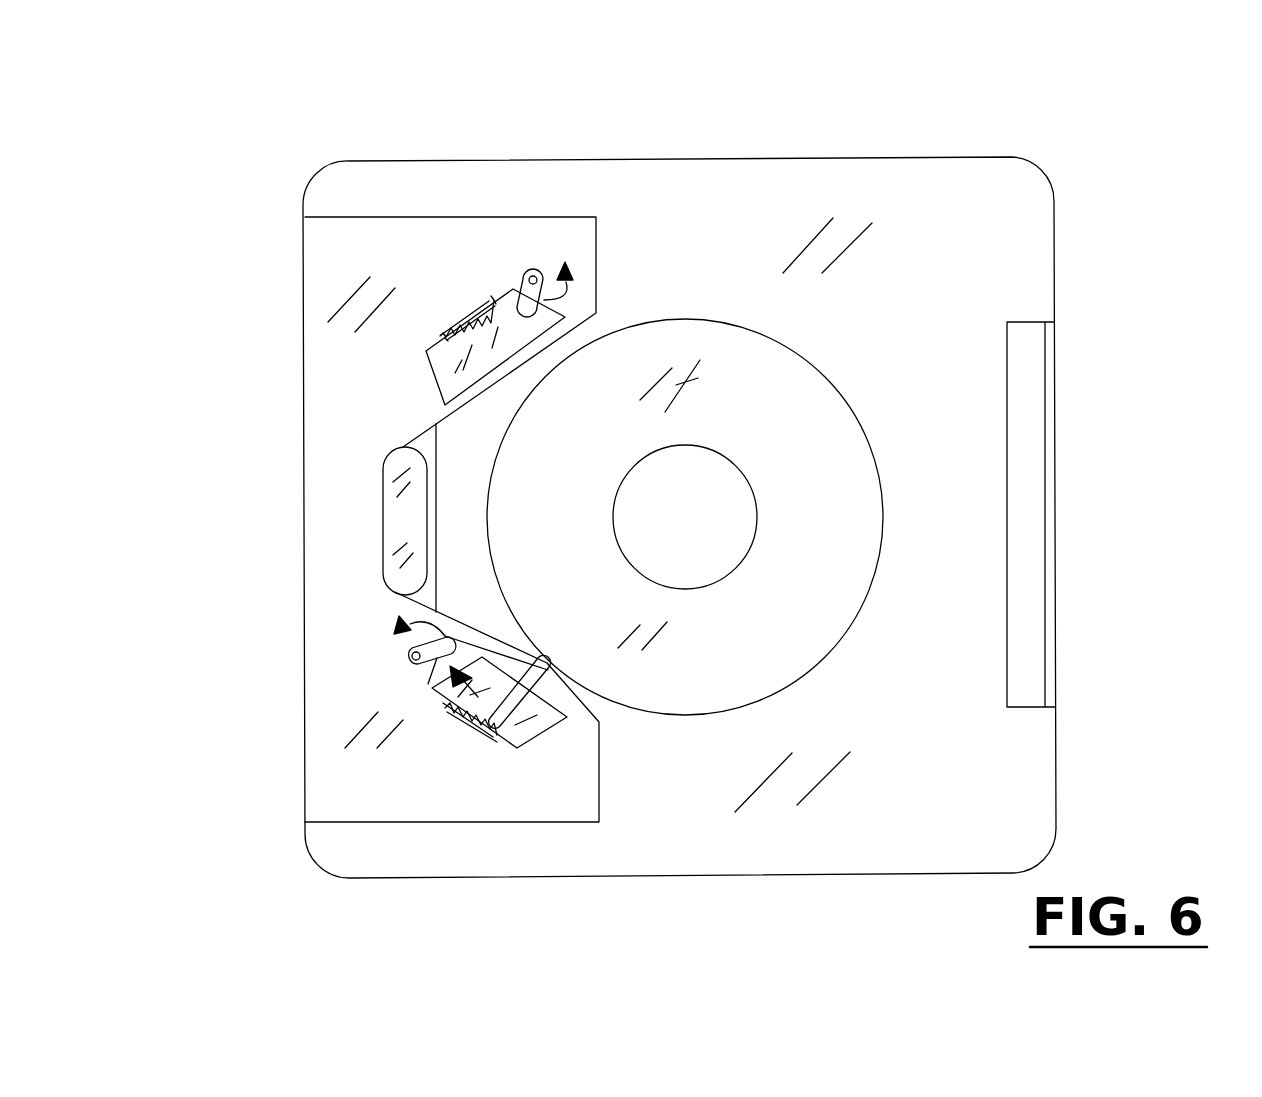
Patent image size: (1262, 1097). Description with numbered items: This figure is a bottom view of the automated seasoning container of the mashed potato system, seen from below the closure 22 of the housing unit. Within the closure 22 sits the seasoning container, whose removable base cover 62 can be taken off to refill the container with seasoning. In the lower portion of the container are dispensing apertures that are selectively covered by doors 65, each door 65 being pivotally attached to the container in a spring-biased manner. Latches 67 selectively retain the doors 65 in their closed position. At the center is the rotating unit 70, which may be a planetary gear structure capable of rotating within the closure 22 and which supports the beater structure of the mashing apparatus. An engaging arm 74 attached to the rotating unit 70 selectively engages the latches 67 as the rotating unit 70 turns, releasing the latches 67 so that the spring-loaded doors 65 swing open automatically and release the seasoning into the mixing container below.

The closure 22 is at (975, 758).
The removable base cover 62 is at (343, 495).
The door 65 is at (445, 348).
The latch 67 is at (522, 284).
The rotating unit 70 is at (747, 385).
The engaging arm 74 is at (506, 720).